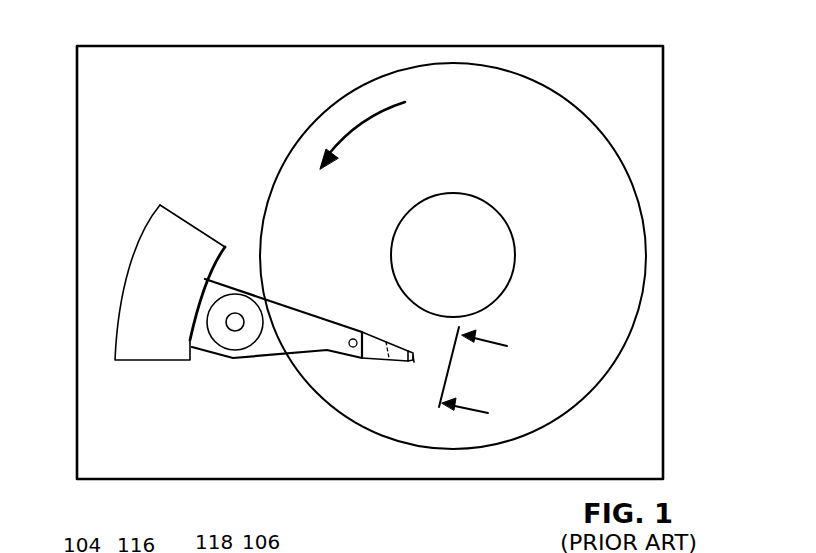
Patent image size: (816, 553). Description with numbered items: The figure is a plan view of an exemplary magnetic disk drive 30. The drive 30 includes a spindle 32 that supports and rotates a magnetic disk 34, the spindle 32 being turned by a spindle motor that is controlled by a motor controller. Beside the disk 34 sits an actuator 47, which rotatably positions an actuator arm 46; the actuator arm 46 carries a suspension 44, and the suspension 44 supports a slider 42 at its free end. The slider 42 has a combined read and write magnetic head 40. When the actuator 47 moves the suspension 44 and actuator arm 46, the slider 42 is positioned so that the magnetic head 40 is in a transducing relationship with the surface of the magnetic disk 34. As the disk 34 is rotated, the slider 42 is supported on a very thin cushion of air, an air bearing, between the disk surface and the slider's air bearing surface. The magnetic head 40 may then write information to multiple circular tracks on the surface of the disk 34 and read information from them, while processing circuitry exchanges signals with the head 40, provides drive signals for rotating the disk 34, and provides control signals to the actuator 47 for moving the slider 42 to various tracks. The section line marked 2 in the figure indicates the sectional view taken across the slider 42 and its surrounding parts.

The magnetic disk drive 30 is at (677, 81).
The spindle 32 is at (488, 199).
The magnetic disk 34 is at (592, 274).
The magnetic head 40 is at (414, 360).
The slider 42 is at (411, 355).
The suspension 44 is at (377, 361).
The actuator arm 46 is at (318, 322).
The actuator 47 is at (199, 236).
The section line 2- 2 is at (482, 380).